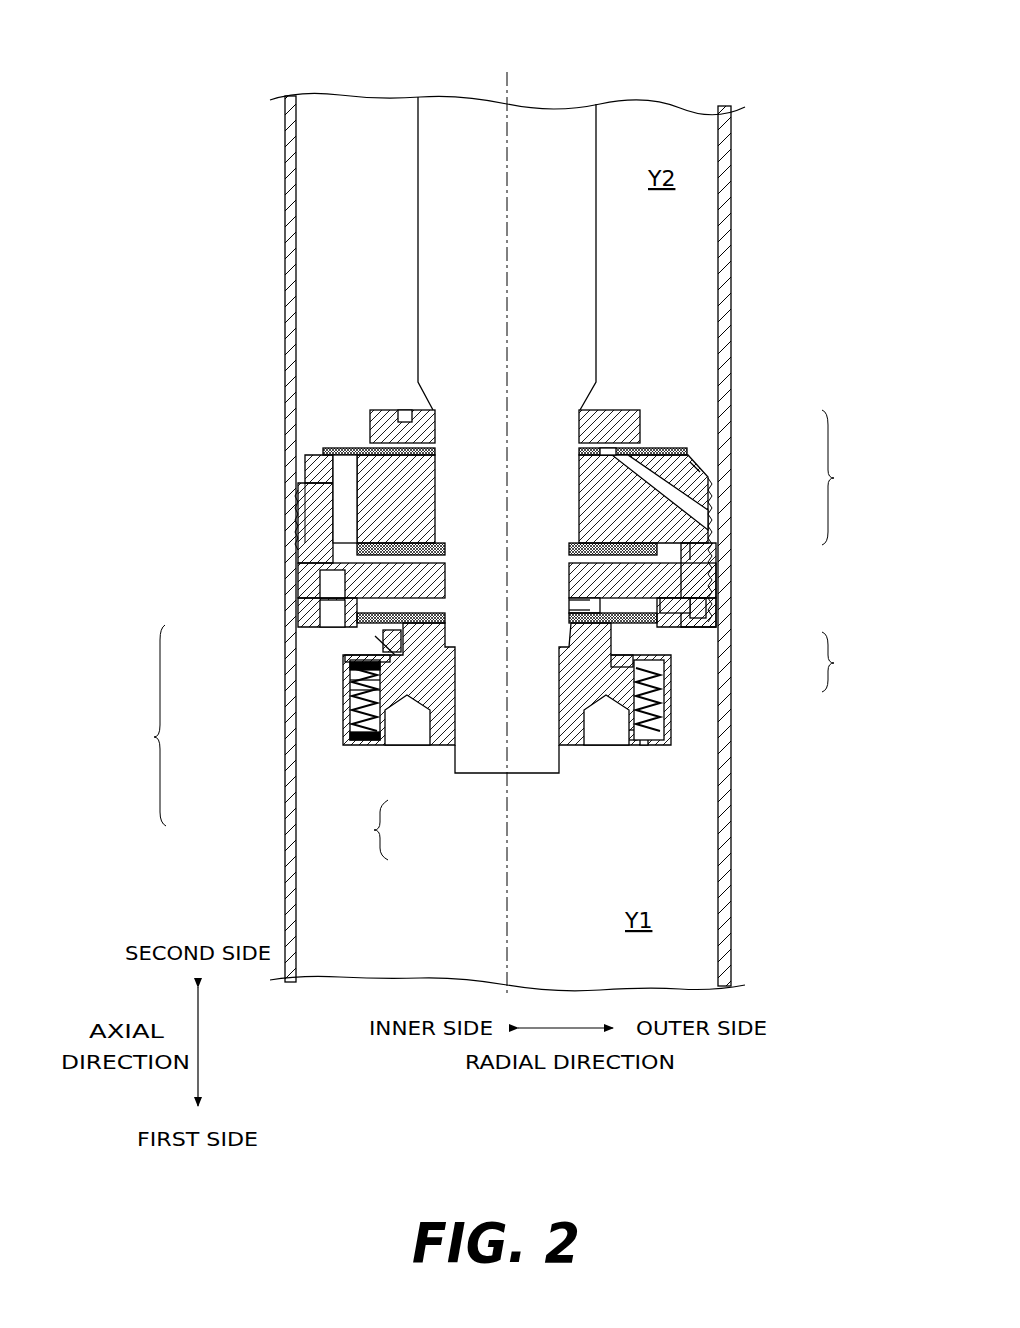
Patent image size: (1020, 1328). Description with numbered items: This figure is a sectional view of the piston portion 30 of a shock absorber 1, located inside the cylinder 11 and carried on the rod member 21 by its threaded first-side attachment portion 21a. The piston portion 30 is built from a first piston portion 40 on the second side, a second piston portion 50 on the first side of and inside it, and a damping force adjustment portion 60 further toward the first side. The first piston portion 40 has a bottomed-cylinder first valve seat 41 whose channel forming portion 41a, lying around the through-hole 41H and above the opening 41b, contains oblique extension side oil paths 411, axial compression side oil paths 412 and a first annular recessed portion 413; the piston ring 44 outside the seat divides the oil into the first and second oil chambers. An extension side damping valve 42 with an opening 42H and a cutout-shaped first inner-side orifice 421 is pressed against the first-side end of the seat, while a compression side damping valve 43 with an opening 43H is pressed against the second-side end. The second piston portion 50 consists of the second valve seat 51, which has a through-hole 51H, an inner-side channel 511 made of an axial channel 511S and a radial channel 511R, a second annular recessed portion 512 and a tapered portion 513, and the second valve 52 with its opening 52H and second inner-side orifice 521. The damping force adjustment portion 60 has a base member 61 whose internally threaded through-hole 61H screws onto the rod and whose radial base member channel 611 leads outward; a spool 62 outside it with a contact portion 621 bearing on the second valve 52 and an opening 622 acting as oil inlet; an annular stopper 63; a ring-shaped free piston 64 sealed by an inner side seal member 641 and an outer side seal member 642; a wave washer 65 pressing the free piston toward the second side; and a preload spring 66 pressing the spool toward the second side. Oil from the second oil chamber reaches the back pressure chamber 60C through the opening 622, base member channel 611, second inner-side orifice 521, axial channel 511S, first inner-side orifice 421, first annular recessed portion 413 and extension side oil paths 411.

The shock absorber 1 is at (265, 72).
The cylinder 11 is at (733, 190).
The rod member 21 is at (415, 240).
The first-side attachment portion 21a is at (545, 775).
The piston portion 30 is at (322, 372).
The first piston portion 40 is at (521, 501).
The first valve seat 41 is at (499, 475).
The through-hole 41H is at (640, 450).
The channel forming portion 41a is at (365, 450).
The opening 41b is at (380, 548).
The extension side oil paths 411 is at (700, 472).
The compression side oil paths 412 is at (330, 495).
The first annular recessed portion 413 is at (712, 563).
The extension side damping valve 42 is at (510, 541).
The opening 42H is at (345, 500).
The first inner-side orifice 421 is at (700, 598).
The compression side damping valve 43 is at (640, 425).
The opening 43H is at (400, 412).
The piston ring 44 is at (700, 505).
The second piston portion 50 is at (532, 685).
The second valve seat 51 is at (523, 685).
The through-hole 51H is at (325, 548).
The inner-side channel 511 is at (473, 729).
The axial channel 511S is at (568, 600).
The radial channel 511R is at (572, 608).
The second annular recessed portion 512 is at (640, 690).
The tapered portion 513 is at (665, 575).
The second valve 52 is at (510, 664).
The opening 52H is at (335, 592).
The second inner-side orifice 521 is at (650, 722).
The damping force adjustment portion 60 is at (457, 754).
The back pressure chamber 60C is at (380, 655).
The base member 61 is at (481, 766).
The through-hole 61H is at (655, 740).
The base member channel 611 is at (420, 712).
The spool 62 is at (365, 710).
The contact portion 621 is at (400, 618).
The opening 622 is at (392, 700).
The stopper 63 is at (365, 668).
The free piston 64 is at (278, 719).
The inner side seal member 641 is at (385, 712).
The outer side seal member 642 is at (380, 698).
The wave washer 65 is at (360, 735).
The preload spring 66 is at (390, 640).